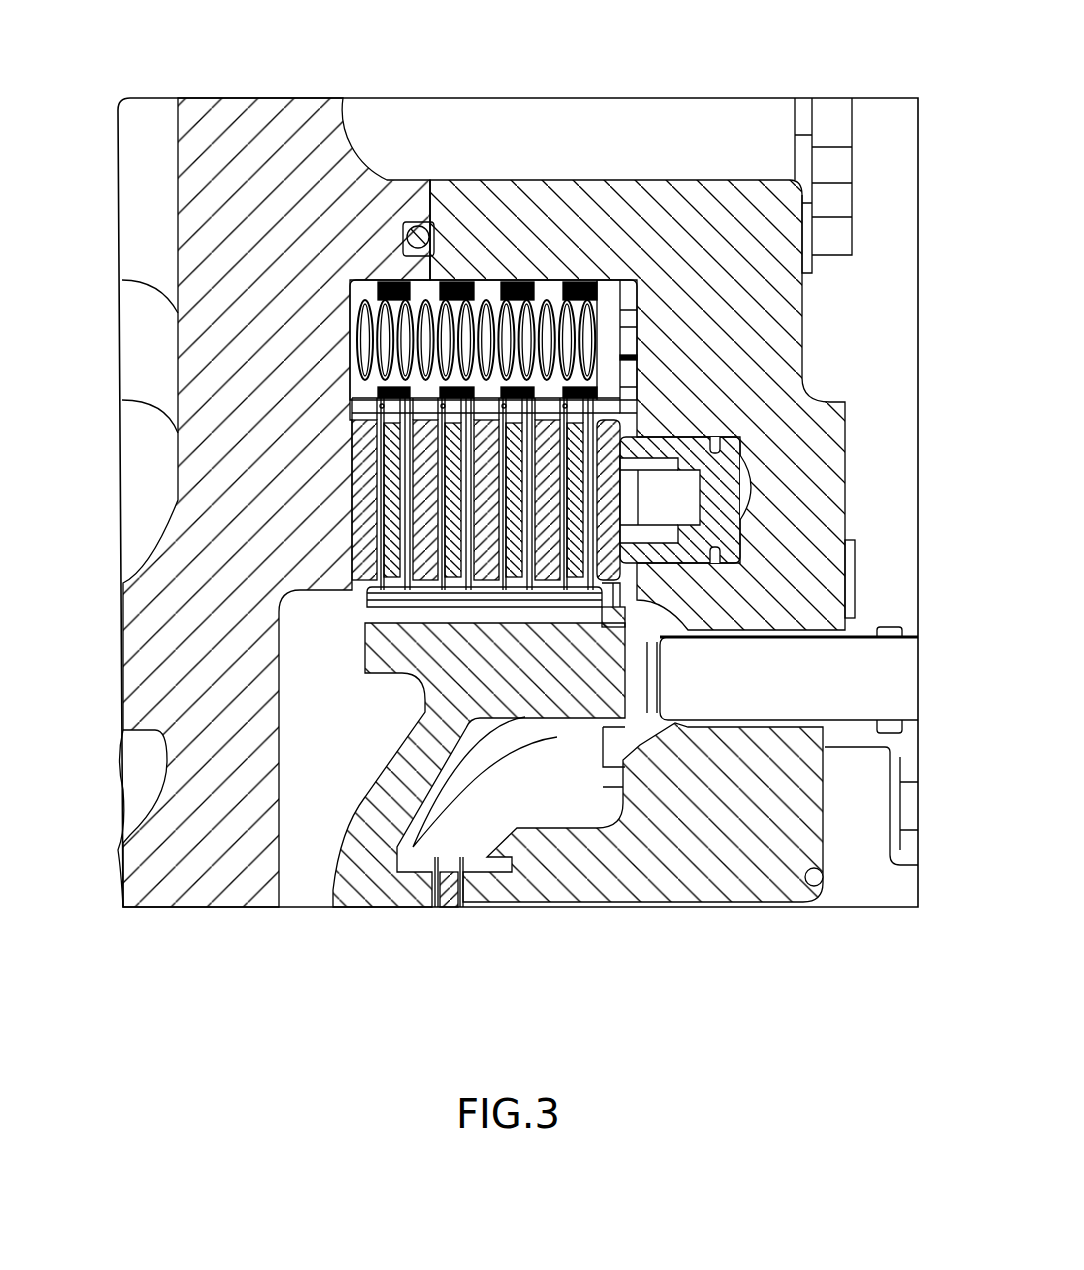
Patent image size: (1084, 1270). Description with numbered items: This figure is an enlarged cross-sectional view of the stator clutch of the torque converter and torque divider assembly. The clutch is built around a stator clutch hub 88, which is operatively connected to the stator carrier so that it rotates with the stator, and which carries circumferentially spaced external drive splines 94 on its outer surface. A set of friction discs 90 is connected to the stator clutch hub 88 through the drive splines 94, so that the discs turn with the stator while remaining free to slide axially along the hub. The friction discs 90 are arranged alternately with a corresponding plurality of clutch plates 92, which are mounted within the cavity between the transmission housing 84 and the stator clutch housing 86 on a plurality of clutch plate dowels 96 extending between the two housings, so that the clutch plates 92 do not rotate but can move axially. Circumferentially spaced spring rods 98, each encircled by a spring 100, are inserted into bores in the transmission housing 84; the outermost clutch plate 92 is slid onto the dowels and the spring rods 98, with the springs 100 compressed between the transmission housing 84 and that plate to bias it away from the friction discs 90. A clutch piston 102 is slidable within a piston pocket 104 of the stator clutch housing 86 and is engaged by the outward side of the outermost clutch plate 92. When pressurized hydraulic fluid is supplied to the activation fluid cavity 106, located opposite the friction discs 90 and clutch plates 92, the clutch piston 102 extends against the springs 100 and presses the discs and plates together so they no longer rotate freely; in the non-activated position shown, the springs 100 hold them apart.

The transmission housing 84 is at (277, 145).
The stator clutch housing 86 is at (812, 610).
The stator clutch hub 88 is at (557, 693).
The friction discs 90 is at (400, 557).
The clutch plates 92 is at (608, 290).
The drive splines 94 is at (392, 613).
The clutch plate dowels 96 is at (630, 318).
The spring rods 98 is at (632, 347).
The springs 100 is at (356, 360).
The clutch piston 102 is at (726, 490).
The piston pocket 104 is at (802, 380).
The activation fluid cavity 106 is at (750, 505).